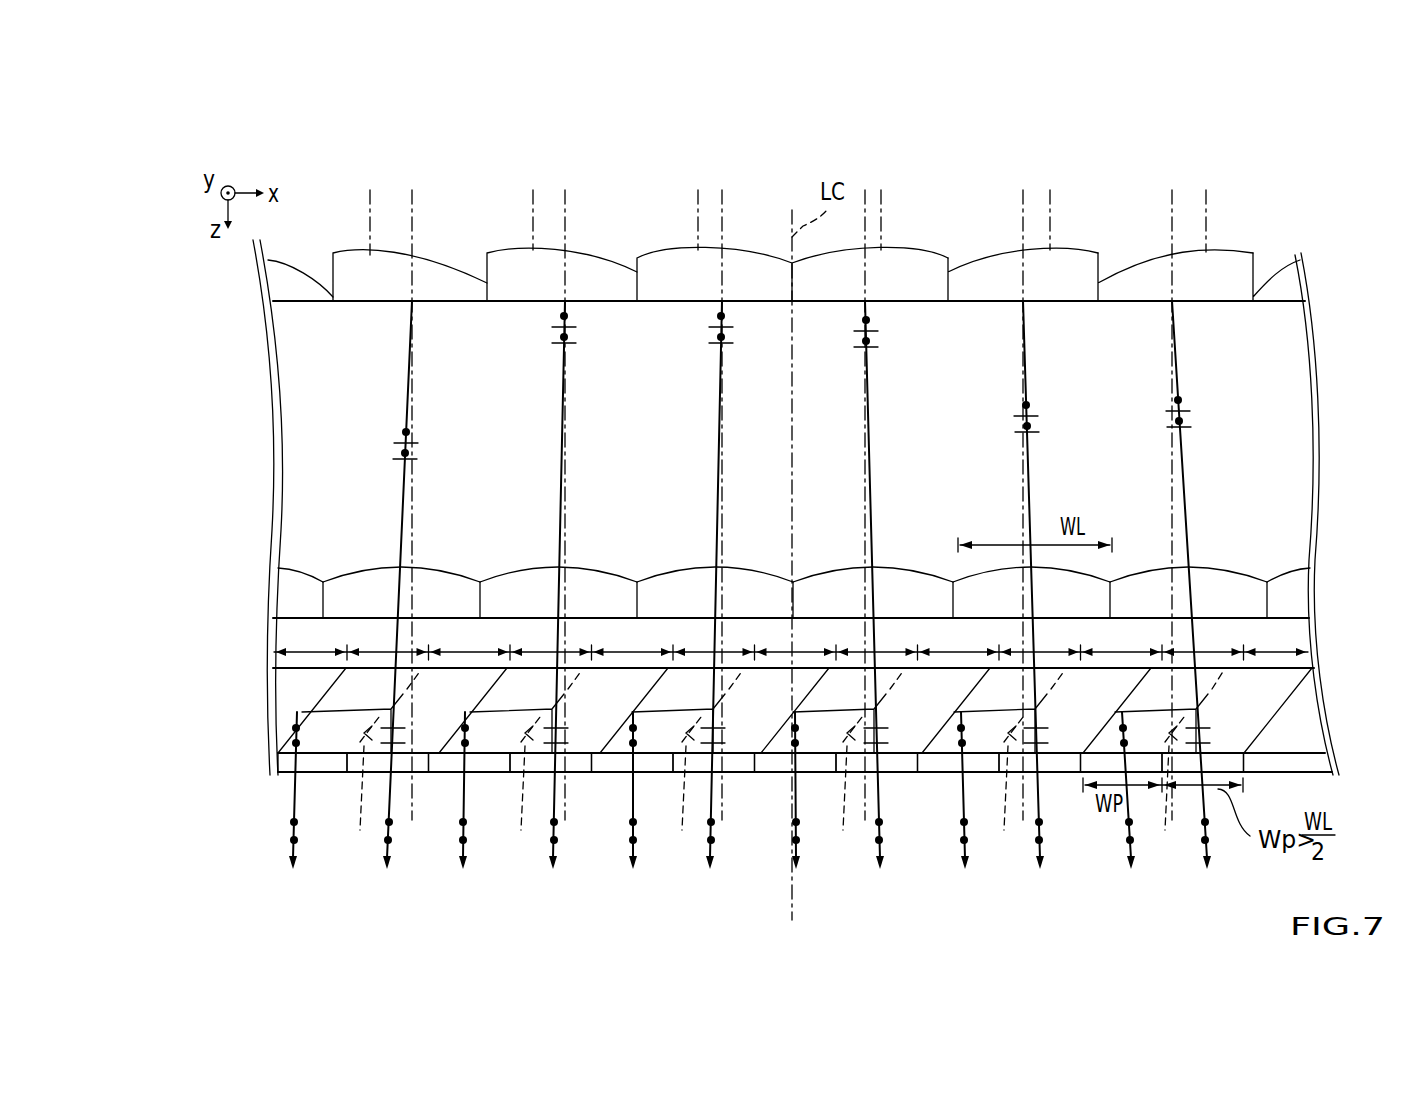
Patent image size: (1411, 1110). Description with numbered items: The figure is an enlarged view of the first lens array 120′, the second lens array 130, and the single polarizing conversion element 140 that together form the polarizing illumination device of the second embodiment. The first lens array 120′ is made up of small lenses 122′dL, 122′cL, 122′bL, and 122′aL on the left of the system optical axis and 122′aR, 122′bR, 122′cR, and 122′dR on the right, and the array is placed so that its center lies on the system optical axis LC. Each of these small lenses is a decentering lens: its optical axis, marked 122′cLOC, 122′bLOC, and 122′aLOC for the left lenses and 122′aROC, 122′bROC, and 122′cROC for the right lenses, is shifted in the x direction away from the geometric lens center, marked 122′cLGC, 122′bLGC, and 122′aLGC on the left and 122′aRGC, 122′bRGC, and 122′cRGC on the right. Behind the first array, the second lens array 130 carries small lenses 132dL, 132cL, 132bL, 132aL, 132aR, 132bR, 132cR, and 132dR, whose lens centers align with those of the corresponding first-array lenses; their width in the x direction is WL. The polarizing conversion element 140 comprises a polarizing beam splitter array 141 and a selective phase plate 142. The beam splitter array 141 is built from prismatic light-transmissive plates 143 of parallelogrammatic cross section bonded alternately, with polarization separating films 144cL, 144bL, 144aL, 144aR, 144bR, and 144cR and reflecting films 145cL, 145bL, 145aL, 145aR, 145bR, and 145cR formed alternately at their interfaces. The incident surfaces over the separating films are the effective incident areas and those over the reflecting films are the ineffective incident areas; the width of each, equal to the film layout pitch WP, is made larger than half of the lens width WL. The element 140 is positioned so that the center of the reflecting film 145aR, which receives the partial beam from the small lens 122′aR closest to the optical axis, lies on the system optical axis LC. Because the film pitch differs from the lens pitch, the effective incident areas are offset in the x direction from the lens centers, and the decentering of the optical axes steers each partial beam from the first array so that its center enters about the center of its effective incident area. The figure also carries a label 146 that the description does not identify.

The first lens array 120′ is at (240, 287).
The optical axis of small lens 122′cL 122′cLOC is at (369, 188).
The optical axis of small lens 122′bL 122′bLOC is at (532, 188).
The optical axis of small lens 122′aL 122′aLOC is at (697, 188).
The lens center of small lens 122′aR 122′aRGC is at (865, 192).
The lens center of small lens 122′bR 122′bRGC is at (1023, 192).
The lens center of small lens 122′cR 122′cRGC is at (1172, 192).
The lens center of small lens 122′cL 122′cLGC is at (451, 172).
The lens center of small lens 122′bL 122′bLGC is at (604, 172).
The lens center of small lens 122′aL 122′aLGC is at (761, 172).
The optical axis of small lens 122′aR 122′aROC is at (920, 172).
The optical axis of small lens 122′bR 122′bROC is at (1089, 172).
The optical axis of small lens 122′cR 122′cROC is at (1206, 192).
The small lens 122′dL is at (310, 295).
The small lens 122′cL is at (438, 295).
The small lens 122′bL is at (593, 295).
The small lens 122′aL is at (747, 295).
The small lens 122′aR is at (917, 295).
The small lens 122′bR is at (1062, 295).
The small lens 122′cR is at (1197, 295).
The small lens 122′dR is at (1283, 295).
The second lens array 130 is at (252, 599).
The small lens 132dL is at (316, 575).
The small lens 132cL is at (458, 575).
The small lens 132bL is at (610, 575).
The small lens 132aL is at (748, 575).
The small lens 132aR is at (825, 575).
The small lens 132bR is at (975, 575).
The small lens 132cR is at (1128, 575).
The small lens 132dR is at (1250, 575).
The polarizing conversion element 140 is at (248, 666).
The polarizing beam splitter array 141 is at (260, 676).
The selective phase plate 142 is at (260, 770).
The prismatic light-transmissive plate 143 is at (818, 755).
The polarization separating film 144cL is at (365, 599).
The polarization separating film 144bL is at (529, 599).
The polarization separating film 144aL is at (694, 599).
The polarization separating film 144aR is at (859, 599).
The polarization separating film 144bR is at (1029, 599).
The polarization separating film 144cR is at (1187, 599).
The reflecting film 145cL is at (268, 804).
The reflecting film 145bL is at (439, 804).
The reflecting film 145aL is at (608, 804).
The reflecting film 145aR is at (774, 804).
The reflecting film 145bR is at (936, 804).
The reflecting film 145cR is at (1098, 804).
The reflected light path 146 is at (364, 772).